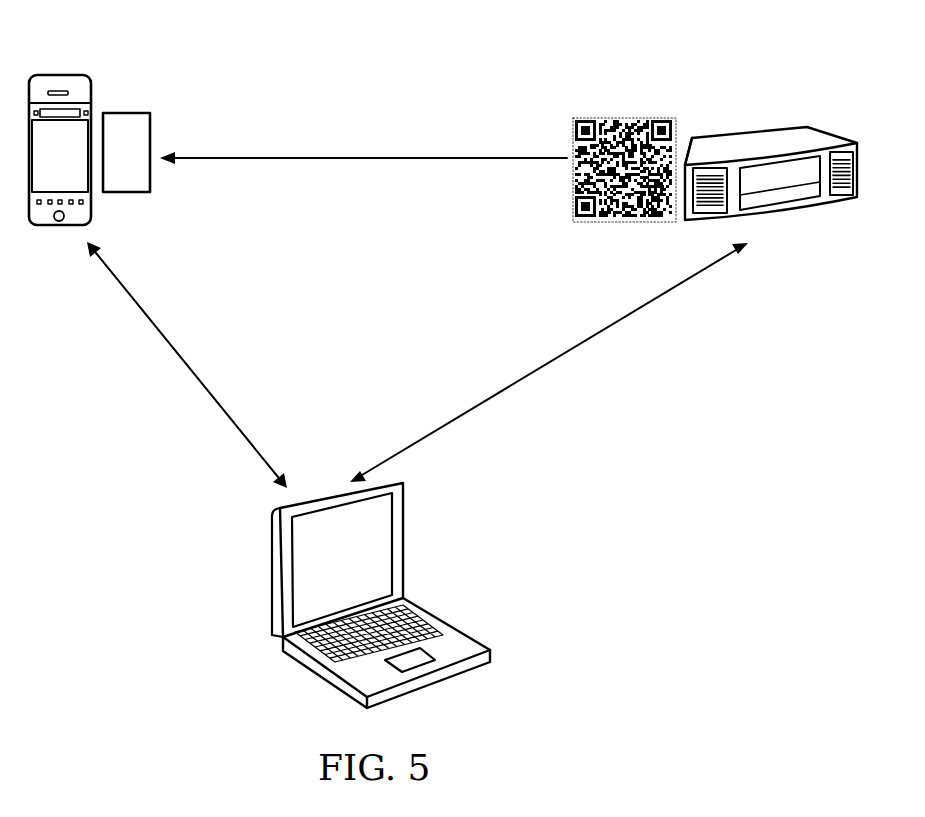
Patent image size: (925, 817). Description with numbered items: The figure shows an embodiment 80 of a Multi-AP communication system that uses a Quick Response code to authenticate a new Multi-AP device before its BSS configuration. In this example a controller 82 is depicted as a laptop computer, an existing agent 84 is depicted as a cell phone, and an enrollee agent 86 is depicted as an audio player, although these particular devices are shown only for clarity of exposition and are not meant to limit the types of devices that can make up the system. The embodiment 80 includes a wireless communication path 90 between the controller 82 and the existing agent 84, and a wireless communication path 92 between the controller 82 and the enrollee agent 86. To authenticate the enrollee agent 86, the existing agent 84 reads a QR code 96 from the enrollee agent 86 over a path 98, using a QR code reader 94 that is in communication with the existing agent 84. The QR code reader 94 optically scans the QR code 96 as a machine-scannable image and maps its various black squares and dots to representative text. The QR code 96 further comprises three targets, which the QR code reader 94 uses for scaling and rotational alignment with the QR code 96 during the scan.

The embodiment 80 is at (467, 50).
The controller 82 is at (356, 564).
The existing agent 84 is at (68, 168).
The enrollee agent 86 is at (781, 154).
The wireless communication path 90 is at (208, 390).
The wireless communication path 92 is at (546, 363).
The QR code reader 94 is at (136, 168).
The QR code 96 is at (641, 121).
The path 98 is at (409, 157).